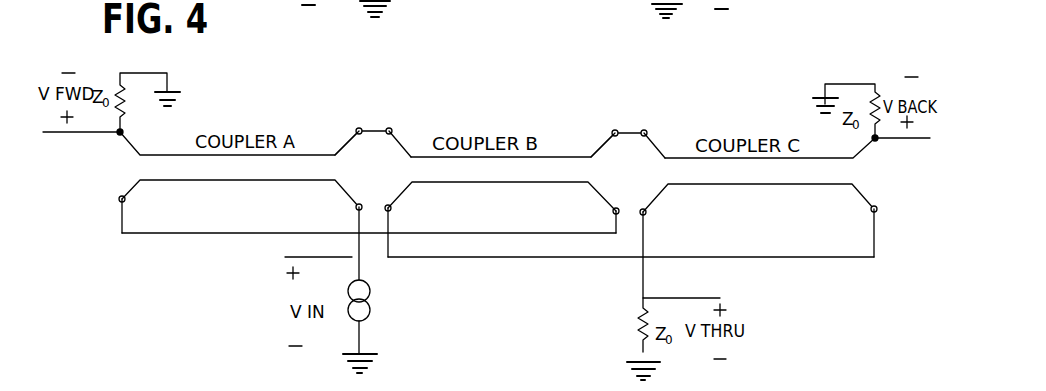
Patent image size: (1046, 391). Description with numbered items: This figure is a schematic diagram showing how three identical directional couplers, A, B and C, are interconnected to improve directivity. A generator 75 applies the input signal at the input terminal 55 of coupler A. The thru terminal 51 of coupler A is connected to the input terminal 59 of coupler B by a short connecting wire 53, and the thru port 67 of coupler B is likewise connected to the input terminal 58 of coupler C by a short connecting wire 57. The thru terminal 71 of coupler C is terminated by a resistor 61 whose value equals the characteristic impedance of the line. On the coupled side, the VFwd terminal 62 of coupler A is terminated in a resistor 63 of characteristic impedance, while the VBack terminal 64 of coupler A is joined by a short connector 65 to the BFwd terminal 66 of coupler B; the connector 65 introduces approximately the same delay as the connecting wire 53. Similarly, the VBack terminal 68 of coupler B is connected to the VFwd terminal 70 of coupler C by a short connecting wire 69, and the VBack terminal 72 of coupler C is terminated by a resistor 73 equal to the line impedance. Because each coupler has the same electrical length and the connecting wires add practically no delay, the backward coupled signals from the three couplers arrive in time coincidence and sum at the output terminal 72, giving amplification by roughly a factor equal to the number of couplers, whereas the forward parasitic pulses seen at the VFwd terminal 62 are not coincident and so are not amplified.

The thru terminal of coupler A 51 is at (122, 199).
The connecting wire 53 is at (233, 233).
The input terminal 55 is at (360, 205).
The connecting wire 57 is at (548, 257).
The input terminal of coupler C 58 is at (871, 210).
The input terminal of coupler B 59 is at (613, 211).
The resistor 61 is at (635, 318).
The VFwd terminal of coupler A 62 is at (118, 134).
The resistor 63 is at (127, 110).
The VBack terminal of coupler A 64 is at (356, 128).
The connector 65 is at (374, 128).
The BFwd terminal of coupler B 66 is at (392, 128).
The thru port of coupler B 67 is at (391, 208).
The VBack terminal of coupler B 68 is at (612, 131).
The connecting wire 69 is at (631, 130).
The VFwd terminal of coupler C 70 is at (646, 131).
The thru terminal of coupler C 71 is at (646, 211).
The VBack terminal of coupler C 72 is at (875, 138).
The resistor 73 is at (883, 92).
The generator 75 is at (372, 303).